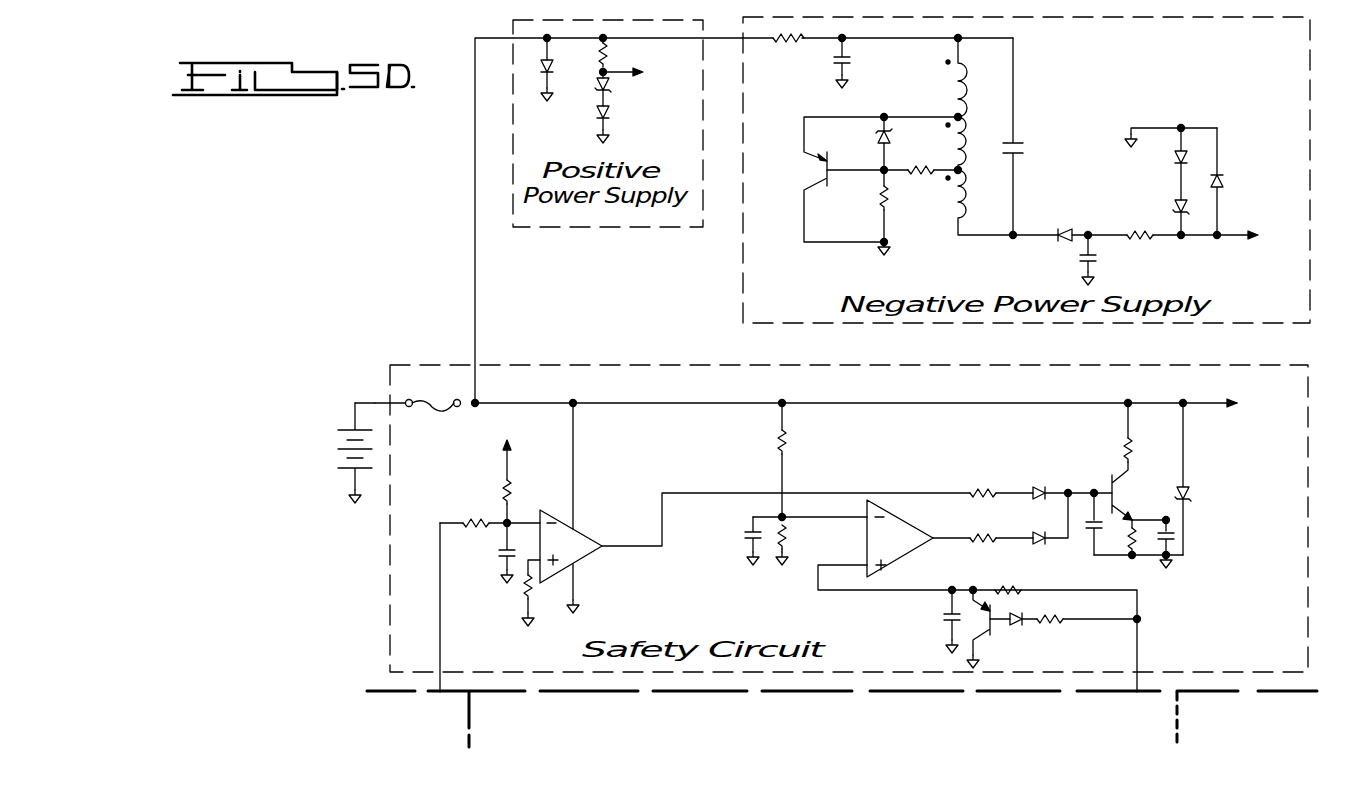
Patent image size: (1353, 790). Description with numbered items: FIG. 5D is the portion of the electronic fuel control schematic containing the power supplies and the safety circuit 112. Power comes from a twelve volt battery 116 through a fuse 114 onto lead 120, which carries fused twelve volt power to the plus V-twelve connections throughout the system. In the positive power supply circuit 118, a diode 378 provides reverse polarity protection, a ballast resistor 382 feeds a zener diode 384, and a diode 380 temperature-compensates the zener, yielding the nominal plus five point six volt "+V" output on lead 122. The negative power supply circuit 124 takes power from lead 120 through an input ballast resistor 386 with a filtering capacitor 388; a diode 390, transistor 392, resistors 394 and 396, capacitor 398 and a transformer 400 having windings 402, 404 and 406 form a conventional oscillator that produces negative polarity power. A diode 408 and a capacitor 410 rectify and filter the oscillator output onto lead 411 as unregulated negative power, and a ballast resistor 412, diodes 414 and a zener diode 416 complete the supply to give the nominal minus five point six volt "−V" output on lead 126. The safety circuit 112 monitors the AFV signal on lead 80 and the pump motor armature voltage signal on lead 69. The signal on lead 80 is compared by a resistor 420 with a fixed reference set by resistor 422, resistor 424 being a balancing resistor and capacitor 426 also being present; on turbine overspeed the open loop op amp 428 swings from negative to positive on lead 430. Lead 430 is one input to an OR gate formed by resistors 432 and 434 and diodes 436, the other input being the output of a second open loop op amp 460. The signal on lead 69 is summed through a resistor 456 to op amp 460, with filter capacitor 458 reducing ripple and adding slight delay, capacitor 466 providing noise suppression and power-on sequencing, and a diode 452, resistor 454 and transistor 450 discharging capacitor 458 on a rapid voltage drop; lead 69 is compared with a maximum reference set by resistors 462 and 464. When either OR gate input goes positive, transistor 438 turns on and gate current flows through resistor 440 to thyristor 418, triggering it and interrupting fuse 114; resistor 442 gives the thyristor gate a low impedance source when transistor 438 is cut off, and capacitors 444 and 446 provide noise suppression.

The lead 69 is at (1137, 645).
The lead 80 is at (440, 660).
The safety circuit 112 is at (1308, 585).
The fuse 114 is at (440, 408).
The 12 volt battery 116 is at (340, 470).
The positive power supply circuit 118 is at (613, 227).
The +V12 lead 120 is at (475, 258).
The +V output lead 122 is at (618, 77).
The negative power supply circuit 124 is at (1185, 323).
The −V output lead 126 is at (1245, 240).
The diode 378 is at (556, 74).
The diode 380 is at (612, 112).
The ballast resistor 382 is at (609, 55).
The zener diode 384 is at (612, 88).
The input ballast resistor 386 is at (784, 57).
The capacitor 388 is at (851, 66).
The diode 390 is at (878, 138).
The transistor 392 is at (815, 185).
The resistor 394 is at (889, 197).
The resistor 396 is at (925, 165).
The capacitor 398 is at (1018, 143).
The transformer 400 is at (955, 117).
The winding 402 is at (968, 83).
The winding 404 is at (970, 140).
The winding 406 is at (968, 180).
The diode 408 is at (1066, 243).
The capacitor 410 is at (1098, 263).
The lead 411 is at (1092, 232).
The ballast resistor 412 is at (1135, 241).
The diodes 414 is at (1190, 162).
The zener diode 416 is at (1175, 208).
The thyristor 418 is at (1190, 493).
The resistor 420 is at (478, 502).
The resistor 422 is at (512, 492).
The balancing resistor 424 is at (521, 595).
The capacitor 426 is at (498, 553).
The open loop op amp 428 is at (605, 552).
The lead 430 is at (712, 490).
The resistor 432 is at (996, 469).
The resistor 434 is at (985, 545).
The diodes 436 is at (1030, 530).
The transistor 438 is at (1118, 490).
The resistor 440 is at (1124, 447).
The resistor 442 is at (1126, 550).
The capacitor 444 is at (1090, 540).
The capacitor 446 is at (1175, 538).
The transistor 450 is at (984, 640).
The diode 452 is at (1022, 628).
The resistor 454 is at (1058, 613).
The resistor 456 is at (1002, 585).
The filter capacitor 458 is at (944, 617).
The open loop op amp 460 is at (920, 560).
The resistor 462 is at (787, 441).
The resistor 464 is at (787, 536).
The capacitor 466 is at (745, 536).